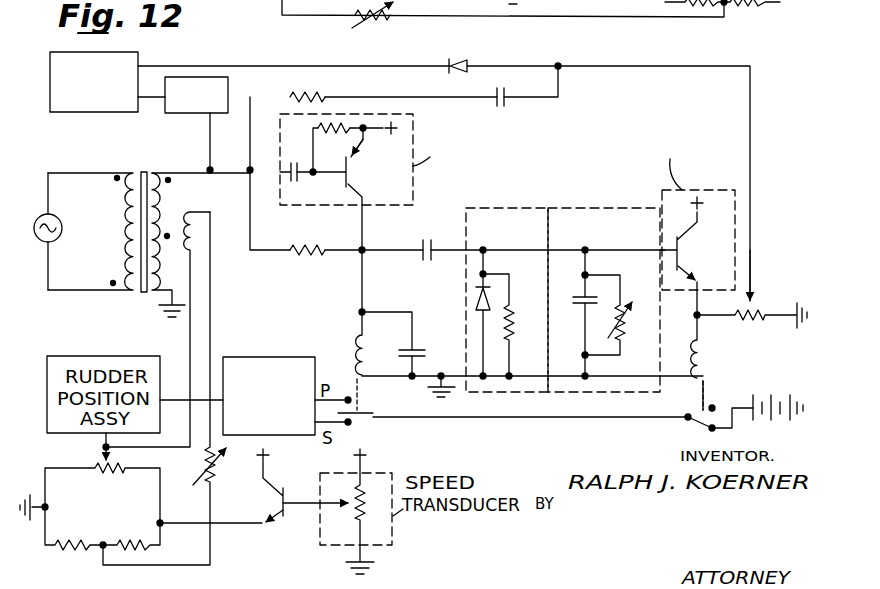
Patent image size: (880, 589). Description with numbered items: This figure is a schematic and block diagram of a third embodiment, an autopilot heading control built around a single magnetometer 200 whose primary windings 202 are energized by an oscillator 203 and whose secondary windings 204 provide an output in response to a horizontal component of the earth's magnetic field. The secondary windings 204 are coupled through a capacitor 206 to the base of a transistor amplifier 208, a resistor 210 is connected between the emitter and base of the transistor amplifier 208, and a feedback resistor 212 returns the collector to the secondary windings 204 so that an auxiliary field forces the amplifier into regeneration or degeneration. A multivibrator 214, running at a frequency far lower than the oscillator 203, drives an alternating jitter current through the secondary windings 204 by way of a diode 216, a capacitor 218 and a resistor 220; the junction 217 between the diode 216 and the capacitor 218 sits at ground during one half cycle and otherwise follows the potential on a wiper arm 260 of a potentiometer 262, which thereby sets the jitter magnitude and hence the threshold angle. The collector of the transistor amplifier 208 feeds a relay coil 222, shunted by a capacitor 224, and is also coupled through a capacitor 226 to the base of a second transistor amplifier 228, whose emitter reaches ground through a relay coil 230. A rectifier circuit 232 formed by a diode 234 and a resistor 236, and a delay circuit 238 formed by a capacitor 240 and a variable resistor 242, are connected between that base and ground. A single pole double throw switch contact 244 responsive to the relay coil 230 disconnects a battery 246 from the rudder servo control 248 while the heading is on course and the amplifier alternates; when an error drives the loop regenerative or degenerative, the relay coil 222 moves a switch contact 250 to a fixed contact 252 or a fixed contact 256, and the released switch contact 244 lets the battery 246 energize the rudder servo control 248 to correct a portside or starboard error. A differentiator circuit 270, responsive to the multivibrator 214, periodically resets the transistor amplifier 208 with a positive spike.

The magnetometer 200 is at (139, 299).
The primary windings 202 is at (112, 221).
The oscillator 203 is at (56, 242).
The secondary windings 204 is at (174, 204).
The capacitor 206 is at (296, 185).
The transistor amplifier 208 is at (352, 175).
The resistor 210 is at (335, 141).
The feedback resistor 212 is at (315, 235).
The multivibrator 214 is at (112, 117).
The diode 216 is at (456, 70).
The junction 217 is at (561, 69).
The capacitor 218 is at (523, 88).
The resistor 220 is at (324, 97).
The relay coil 222 is at (354, 334).
The capacitor 224 is at (405, 350).
The capacitor 226 is at (422, 257).
The transistor amplifier 228 is at (688, 194).
The relay coil 230 is at (704, 357).
The rectifier circuit 232 is at (484, 212).
The diode 234 is at (476, 297).
The resistor 236 is at (513, 340).
The delay circuit 238 is at (571, 212).
The capacitor 240 is at (573, 311).
The variable resistor 242 is at (621, 320).
The switch contact 244 is at (689, 415).
The battery 246 is at (753, 395).
The rudder servo control 248 is at (236, 357).
The switch contact 250 is at (368, 414).
The fixed contact 252 is at (347, 397).
The fixed contact 256 is at (351, 425).
The wiper arm 260 is at (751, 268).
The potentiometer 262 is at (760, 307).
The differentiator circuit 270 is at (228, 97).